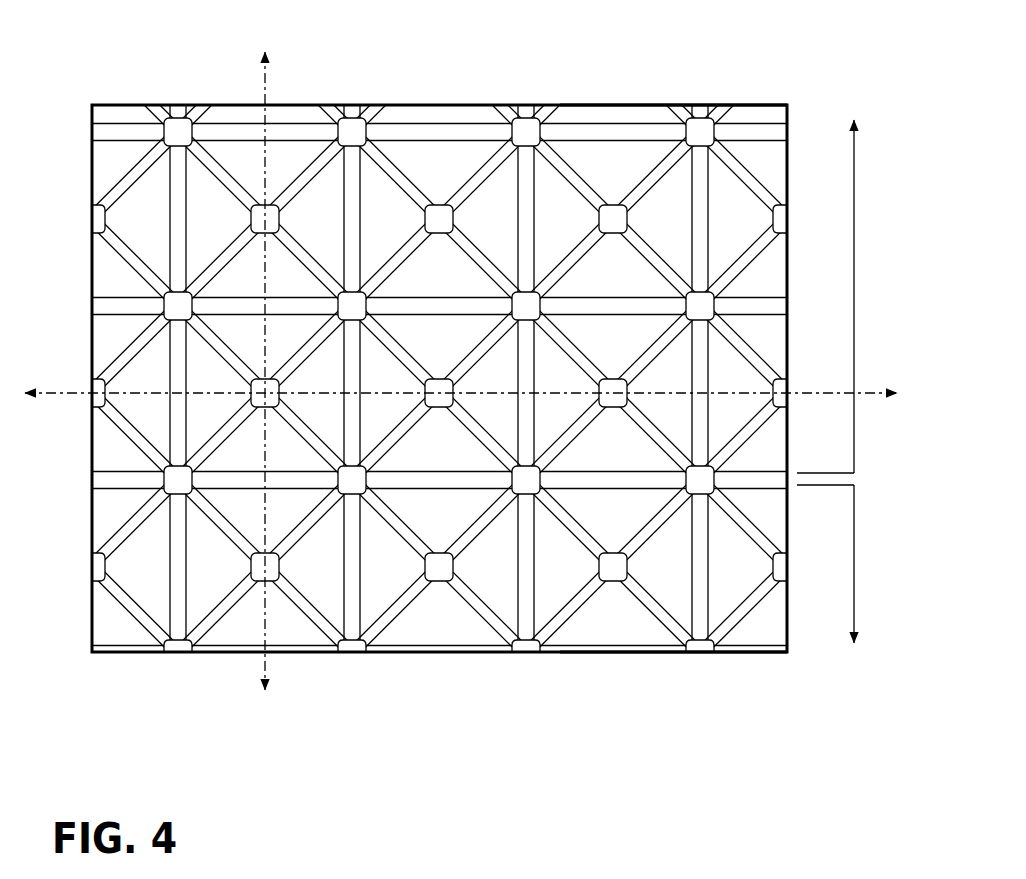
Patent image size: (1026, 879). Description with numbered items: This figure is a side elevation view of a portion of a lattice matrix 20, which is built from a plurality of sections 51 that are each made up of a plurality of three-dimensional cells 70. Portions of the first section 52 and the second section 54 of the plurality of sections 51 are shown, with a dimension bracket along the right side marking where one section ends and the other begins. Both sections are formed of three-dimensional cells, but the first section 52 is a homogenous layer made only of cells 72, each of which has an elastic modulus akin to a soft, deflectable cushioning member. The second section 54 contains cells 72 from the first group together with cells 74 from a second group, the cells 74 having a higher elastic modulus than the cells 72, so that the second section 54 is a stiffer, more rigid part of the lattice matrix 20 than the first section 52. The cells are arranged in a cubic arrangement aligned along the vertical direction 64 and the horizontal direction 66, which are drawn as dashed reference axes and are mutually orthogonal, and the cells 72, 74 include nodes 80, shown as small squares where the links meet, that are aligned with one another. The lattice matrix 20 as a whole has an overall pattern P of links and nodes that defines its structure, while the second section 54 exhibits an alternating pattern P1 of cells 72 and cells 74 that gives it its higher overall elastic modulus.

The lattice matrix 20 is at (877, 285).
The plurality of sections 51 is at (868, 425).
The first section 52 is at (855, 537).
The second section 54 is at (855, 227).
The vertical direction 64 is at (267, 78).
The horizontal direction 66 is at (50, 393).
The plurality of 3D cells 70 is at (567, 75).
The 3D cells of first group 72 is at (232, 218).
The 3D cells of second group 74 is at (222, 383).
The nodes 80 is at (270, 217).
The overall pattern P is at (798, 635).
The pattern of 3D cells in second section P1 is at (757, 82).